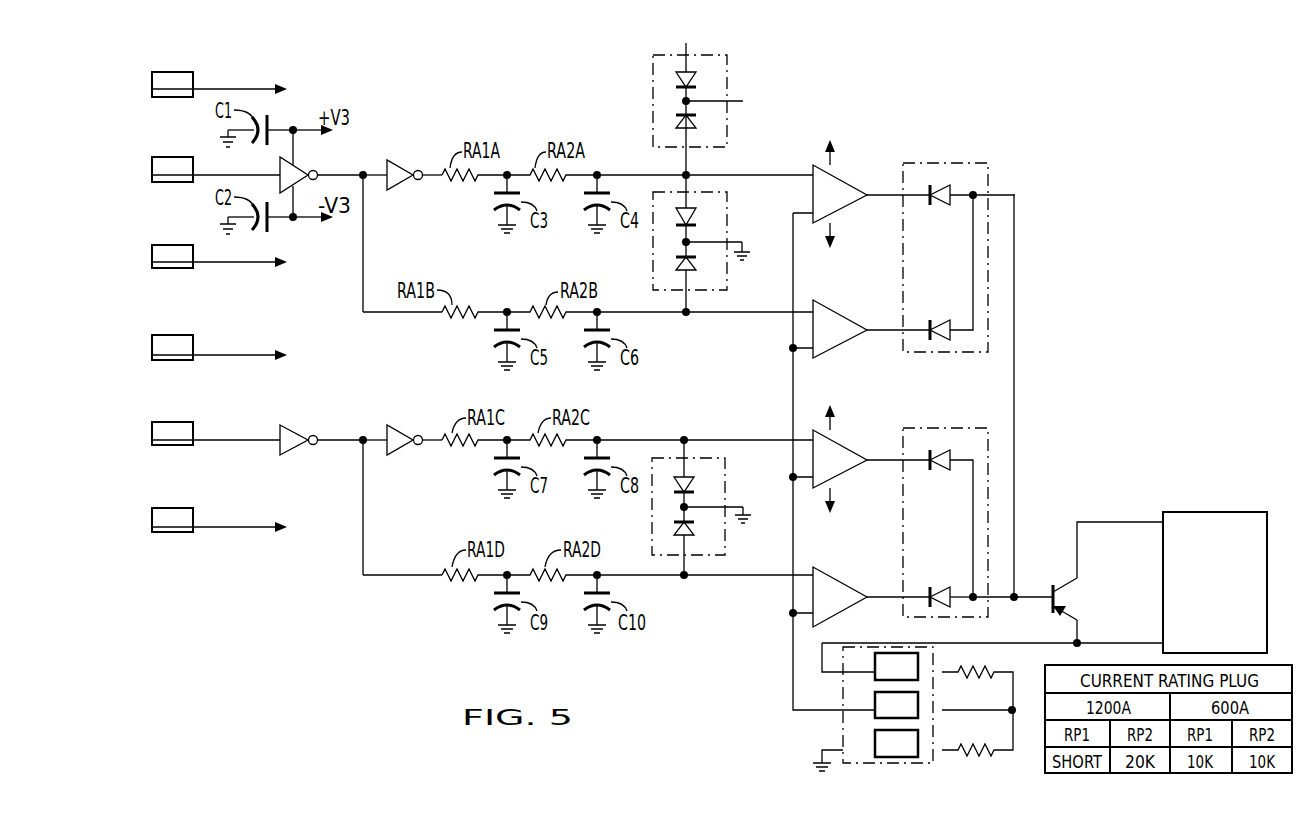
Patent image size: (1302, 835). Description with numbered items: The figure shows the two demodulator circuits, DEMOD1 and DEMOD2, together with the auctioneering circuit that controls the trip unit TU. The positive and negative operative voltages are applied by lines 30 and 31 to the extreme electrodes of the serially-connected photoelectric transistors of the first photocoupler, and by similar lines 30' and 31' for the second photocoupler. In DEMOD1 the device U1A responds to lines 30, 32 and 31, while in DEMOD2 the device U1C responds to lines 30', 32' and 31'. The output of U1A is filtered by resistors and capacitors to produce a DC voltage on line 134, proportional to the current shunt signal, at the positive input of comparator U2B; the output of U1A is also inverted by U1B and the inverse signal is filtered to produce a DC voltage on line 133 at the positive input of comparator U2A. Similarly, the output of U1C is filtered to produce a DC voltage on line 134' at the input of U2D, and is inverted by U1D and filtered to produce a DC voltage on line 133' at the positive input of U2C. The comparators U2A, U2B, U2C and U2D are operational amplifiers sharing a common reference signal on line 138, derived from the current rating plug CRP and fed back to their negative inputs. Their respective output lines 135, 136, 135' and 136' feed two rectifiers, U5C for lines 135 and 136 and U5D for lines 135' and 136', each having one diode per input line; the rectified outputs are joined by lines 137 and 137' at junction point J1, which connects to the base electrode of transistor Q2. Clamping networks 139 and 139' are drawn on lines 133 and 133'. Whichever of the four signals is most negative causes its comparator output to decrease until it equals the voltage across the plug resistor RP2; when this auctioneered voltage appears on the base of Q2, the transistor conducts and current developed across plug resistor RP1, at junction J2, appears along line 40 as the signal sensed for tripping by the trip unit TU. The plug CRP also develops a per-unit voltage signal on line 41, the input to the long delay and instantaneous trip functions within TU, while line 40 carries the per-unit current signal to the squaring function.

The line 30 is at (228, 76).
The line 31 is at (227, 267).
The line 32 is at (216, 164).
The line 30' is at (228, 340).
The line 31' is at (227, 535).
The line 32' is at (216, 448).
The line 133 is at (705, 146).
The line 134 is at (705, 332).
The line 133' is at (705, 423).
The line 134' is at (705, 595).
The output line 135 is at (941, 170).
The output line 136 is at (920, 284).
The output line 135' is at (915, 504).
The output line 136' is at (915, 580).
The rectified output line 137 is at (1036, 396).
The rectified output line (second channel) 137' is at (996, 621).
The line 138 is at (792, 636).
The diode clamp network 139 is at (710, 220).
The diode clamp network (second channel) 139' is at (711, 507).
The line 40 is at (1105, 522).
The line 41 is at (1115, 643).
The junction point J1 is at (1017, 595).
The junction J2 is at (1015, 708).
The transistor Q2 is at (1070, 597).
The trip unit TU is at (1197, 512).
The current rating plug CRP is at (843, 740).
The current rating plug resistor RP1 is at (975, 672).
The current rating plug resistor RP2 is at (982, 755).
The rectifier U5C is at (965, 165).
The rectifier U5D is at (963, 428).
The inverter U1A is at (303, 163).
The inverter U1B is at (412, 150).
The inverter U1C is at (298, 425).
The inverter U1D is at (410, 410).
The comparator U2A is at (839, 196).
The comparator U2B is at (840, 329).
The comparator U2C is at (840, 459).
The comparator U2D is at (840, 597).